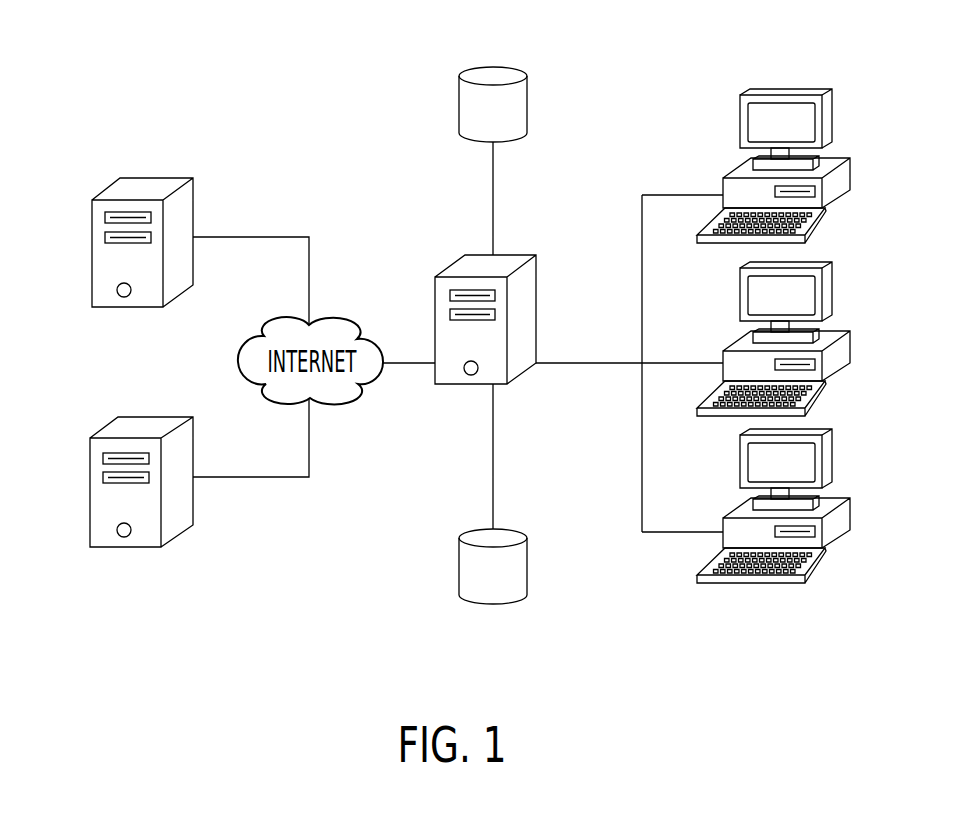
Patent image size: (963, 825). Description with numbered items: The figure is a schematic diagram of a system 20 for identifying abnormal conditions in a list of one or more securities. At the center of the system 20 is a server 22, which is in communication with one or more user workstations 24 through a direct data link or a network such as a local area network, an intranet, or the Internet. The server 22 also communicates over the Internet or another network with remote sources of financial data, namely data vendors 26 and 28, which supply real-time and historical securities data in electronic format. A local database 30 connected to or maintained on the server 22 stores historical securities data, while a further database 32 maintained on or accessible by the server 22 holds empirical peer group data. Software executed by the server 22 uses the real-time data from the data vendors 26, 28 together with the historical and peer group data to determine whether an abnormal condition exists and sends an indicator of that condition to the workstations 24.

The system 20 is at (270, 72).
The server 22 is at (451, 262).
The user workstations 24 is at (850, 173).
The remote source of financial data 26 is at (91, 243).
The data vendor 28 is at (90, 528).
The local database 30 is at (470, 601).
The database 32 is at (488, 67).